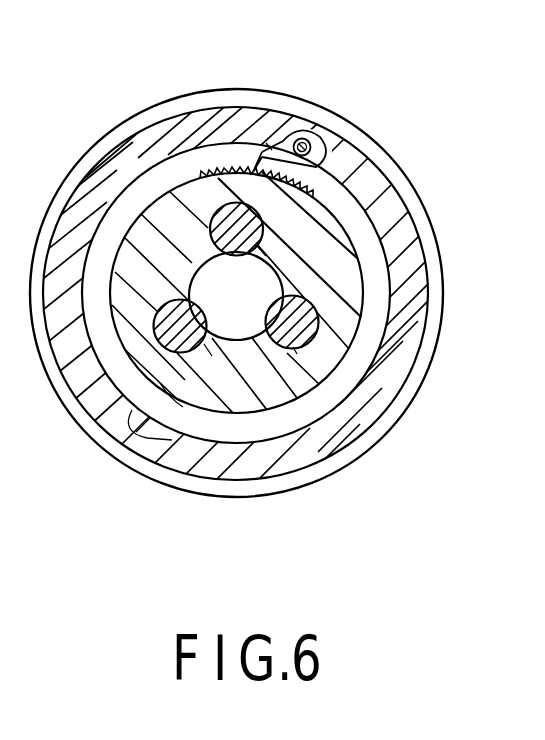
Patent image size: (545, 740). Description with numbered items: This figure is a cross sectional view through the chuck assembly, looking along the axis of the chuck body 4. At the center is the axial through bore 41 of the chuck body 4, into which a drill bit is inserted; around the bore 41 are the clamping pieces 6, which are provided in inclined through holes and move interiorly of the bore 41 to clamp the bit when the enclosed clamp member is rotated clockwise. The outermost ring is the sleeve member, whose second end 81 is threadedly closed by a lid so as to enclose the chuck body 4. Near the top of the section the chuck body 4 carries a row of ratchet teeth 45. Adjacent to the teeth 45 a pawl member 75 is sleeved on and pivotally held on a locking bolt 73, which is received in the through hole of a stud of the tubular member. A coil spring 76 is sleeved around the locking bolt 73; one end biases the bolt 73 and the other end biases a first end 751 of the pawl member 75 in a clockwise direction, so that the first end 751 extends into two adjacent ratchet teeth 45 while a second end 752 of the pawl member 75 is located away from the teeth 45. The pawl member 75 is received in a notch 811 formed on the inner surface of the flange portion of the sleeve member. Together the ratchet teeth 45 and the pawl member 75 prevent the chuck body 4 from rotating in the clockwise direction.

The chuck body 4 is at (407, 404).
The clamping pieces 6 is at (233, 224).
The axial through bore 41 is at (228, 330).
The ratchet teeth 45 is at (312, 193).
The locking bolt 73 is at (313, 140).
The pawl member 75 is at (293, 133).
The first end of the pawl member 751 is at (261, 165).
The second end of the pawl member 752 is at (316, 160).
The coil spring 76 is at (268, 147).
The second end of the sleeve member 81 is at (444, 313).
The notch 811 is at (316, 142).